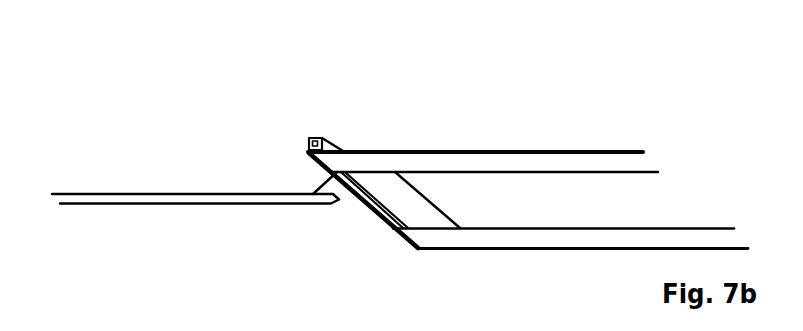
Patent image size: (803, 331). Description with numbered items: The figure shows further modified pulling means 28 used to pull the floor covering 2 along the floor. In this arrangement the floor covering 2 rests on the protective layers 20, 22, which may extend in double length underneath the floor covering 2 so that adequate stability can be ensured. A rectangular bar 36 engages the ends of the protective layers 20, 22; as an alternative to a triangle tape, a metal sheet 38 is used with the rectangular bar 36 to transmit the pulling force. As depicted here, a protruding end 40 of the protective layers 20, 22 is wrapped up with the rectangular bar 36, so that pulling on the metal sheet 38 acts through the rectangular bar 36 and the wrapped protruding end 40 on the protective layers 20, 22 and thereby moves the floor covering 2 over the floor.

The floor covering 2 is at (580, 192).
The protective layer 20 is at (358, 162).
The protective layer 22 is at (445, 240).
The pulling means 28 is at (207, 110).
The rectangular bar 36 is at (392, 223).
The metal sheet 38 is at (349, 202).
The protruding end 40 is at (308, 128).